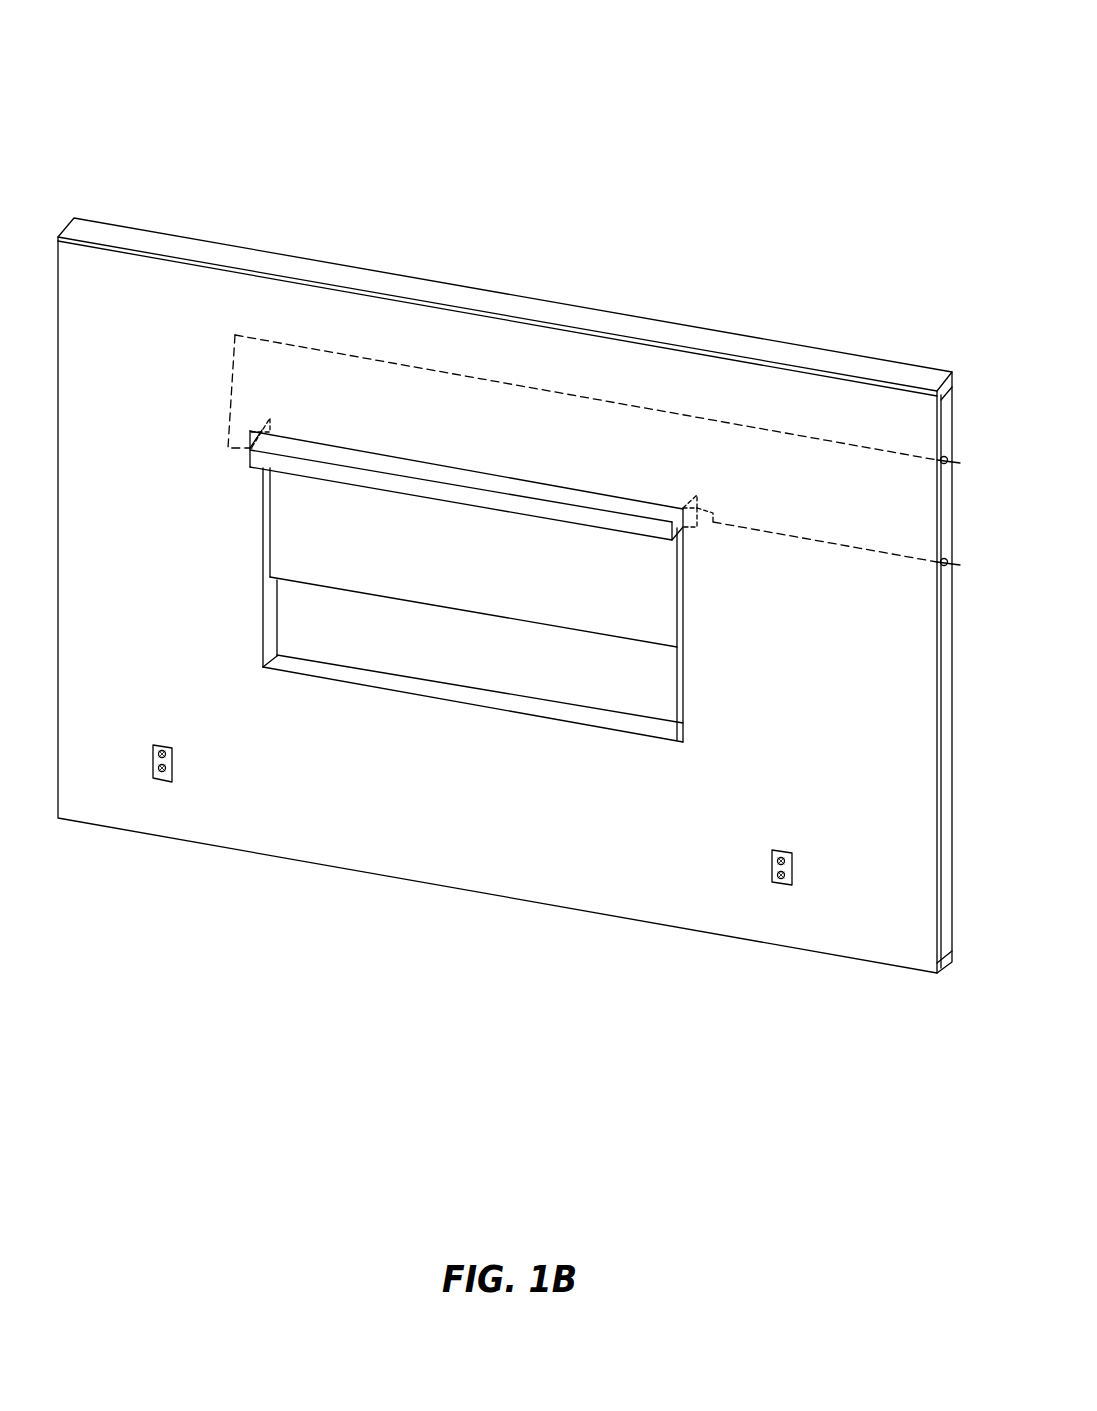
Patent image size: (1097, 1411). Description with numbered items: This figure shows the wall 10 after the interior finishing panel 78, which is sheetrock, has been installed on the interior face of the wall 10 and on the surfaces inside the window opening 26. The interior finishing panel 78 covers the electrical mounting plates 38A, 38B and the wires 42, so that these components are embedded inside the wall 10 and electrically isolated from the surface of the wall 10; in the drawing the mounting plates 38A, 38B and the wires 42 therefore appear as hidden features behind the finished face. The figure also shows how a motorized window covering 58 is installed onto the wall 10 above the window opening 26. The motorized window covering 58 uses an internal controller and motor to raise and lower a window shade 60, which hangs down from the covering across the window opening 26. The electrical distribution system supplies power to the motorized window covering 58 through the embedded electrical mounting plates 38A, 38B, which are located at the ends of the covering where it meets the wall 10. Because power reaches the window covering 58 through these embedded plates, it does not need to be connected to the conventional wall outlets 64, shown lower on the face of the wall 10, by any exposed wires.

The wall 10 is at (650, 272).
The interior finishing panel 78 is at (148, 357).
The electrical mounting plate 38A is at (240, 437).
The electrical mounting plate 38B is at (707, 515).
The motorized window covering 58 is at (375, 460).
The window shade 60 is at (437, 535).
The wires 42 is at (822, 433).
The window opening 26 is at (440, 652).
The wall outlets 64 is at (155, 773).